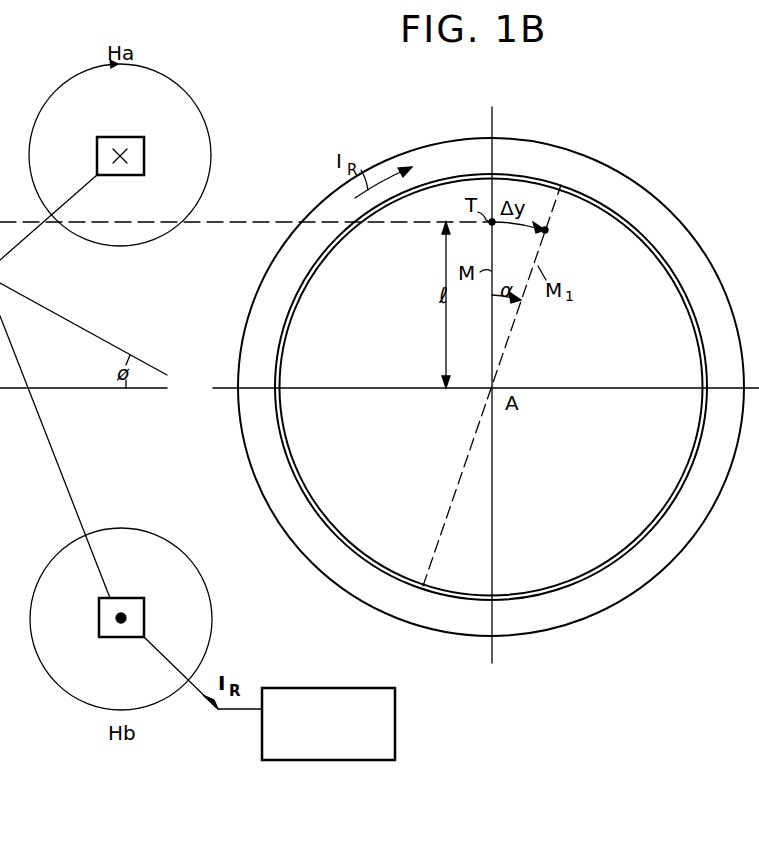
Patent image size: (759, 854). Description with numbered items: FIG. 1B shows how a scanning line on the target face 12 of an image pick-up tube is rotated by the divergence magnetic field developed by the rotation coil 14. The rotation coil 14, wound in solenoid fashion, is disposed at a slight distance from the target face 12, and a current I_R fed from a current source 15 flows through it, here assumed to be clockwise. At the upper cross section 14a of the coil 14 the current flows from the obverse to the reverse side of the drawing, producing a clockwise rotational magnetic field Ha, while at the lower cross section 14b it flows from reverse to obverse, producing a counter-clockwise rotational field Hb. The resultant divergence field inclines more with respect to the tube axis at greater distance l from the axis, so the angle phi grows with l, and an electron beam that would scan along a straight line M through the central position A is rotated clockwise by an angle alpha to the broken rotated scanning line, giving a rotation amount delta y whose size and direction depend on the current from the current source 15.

The target face 12 is at (680, 316).
The rotation coil 14 is at (612, 186).
The upper cross section of the coil 14a is at (123, 129).
The lower cross section of the coil 14b is at (128, 637).
The current source 15 is at (330, 688).